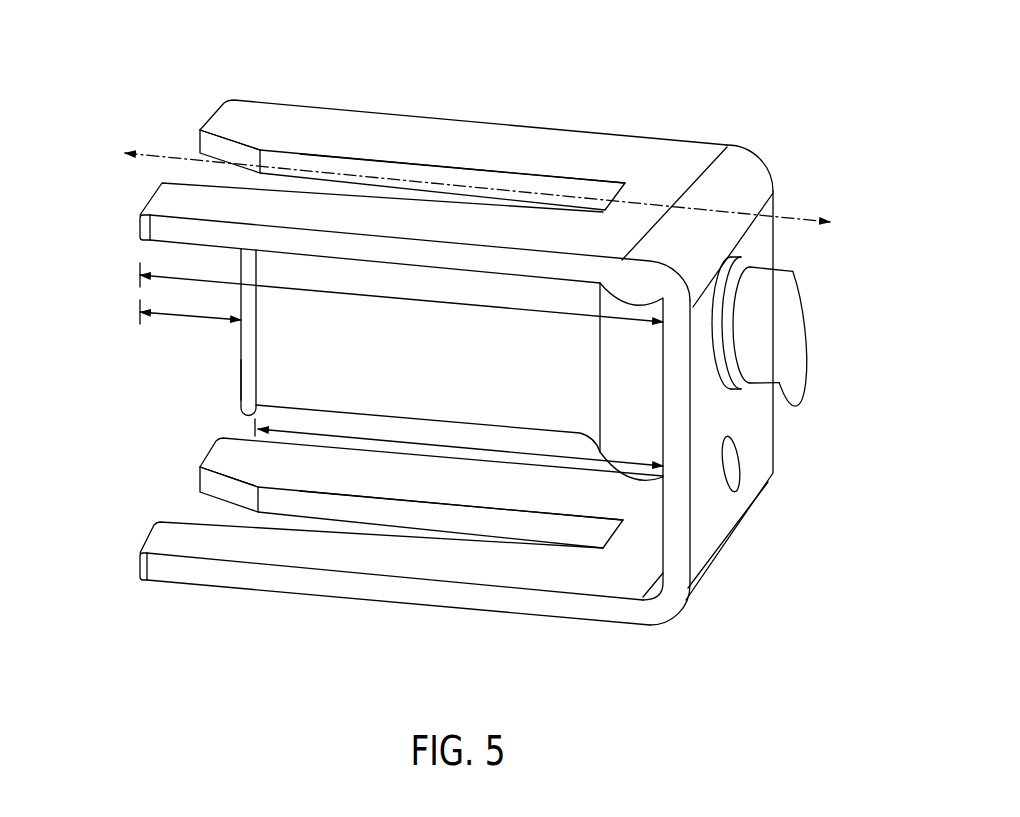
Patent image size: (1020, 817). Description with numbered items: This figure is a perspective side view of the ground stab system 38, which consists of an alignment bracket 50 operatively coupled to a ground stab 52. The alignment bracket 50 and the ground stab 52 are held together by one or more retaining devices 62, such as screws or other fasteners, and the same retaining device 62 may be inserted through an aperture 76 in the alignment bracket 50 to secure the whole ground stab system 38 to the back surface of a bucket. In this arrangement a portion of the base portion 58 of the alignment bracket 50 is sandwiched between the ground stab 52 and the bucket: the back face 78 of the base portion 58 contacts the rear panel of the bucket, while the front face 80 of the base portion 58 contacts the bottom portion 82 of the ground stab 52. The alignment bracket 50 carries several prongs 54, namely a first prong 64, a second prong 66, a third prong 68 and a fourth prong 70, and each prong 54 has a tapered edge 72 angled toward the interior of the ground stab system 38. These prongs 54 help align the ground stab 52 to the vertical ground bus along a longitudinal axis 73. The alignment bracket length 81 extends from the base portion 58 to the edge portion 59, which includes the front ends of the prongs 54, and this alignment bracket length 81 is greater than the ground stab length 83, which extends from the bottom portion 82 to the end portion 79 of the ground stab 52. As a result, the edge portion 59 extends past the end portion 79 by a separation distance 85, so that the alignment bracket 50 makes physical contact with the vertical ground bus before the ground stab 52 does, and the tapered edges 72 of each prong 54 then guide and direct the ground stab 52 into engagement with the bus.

The ground stab system 38 is at (793, 67).
The alignment bracket 50 is at (728, 573).
The ground stab 52 is at (245, 344).
The prongs 54 is at (170, 172).
The base portion 58 is at (753, 240).
The edge portion 59 is at (158, 202).
The retaining device 62 is at (772, 317).
The first prong 64 is at (422, 137).
The second prong 66 is at (515, 213).
The third prong 68 is at (328, 555).
The fourth prong 70 is at (460, 517).
The tapered edge 72 is at (237, 150).
The longitudinal axis 73 is at (735, 207).
The aperture 76 is at (738, 433).
The back face 78 is at (710, 520).
The end portion 79 is at (235, 364).
The front face 80 is at (660, 537).
The alignment bracket length 81 is at (175, 277).
The bottom portion 82 is at (622, 260).
The ground stab length 83 is at (298, 430).
The separation distance 85 is at (168, 313).